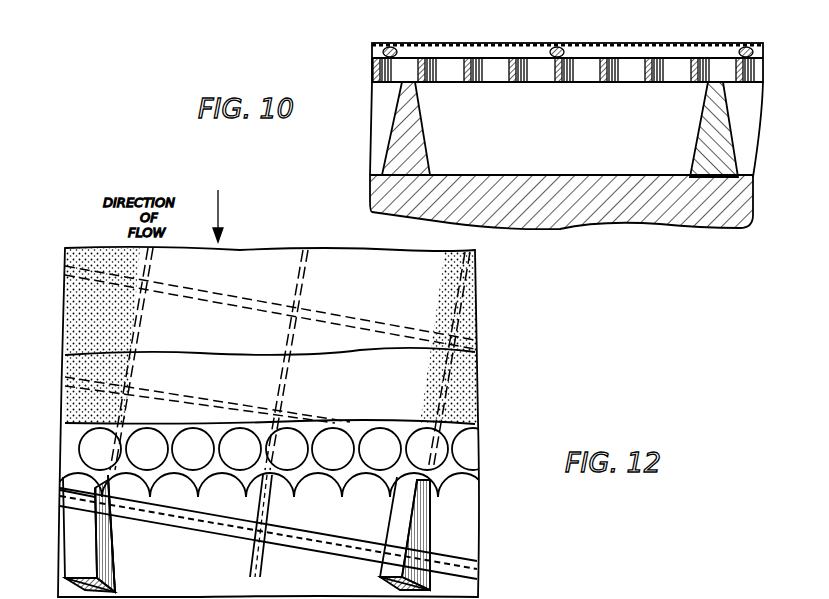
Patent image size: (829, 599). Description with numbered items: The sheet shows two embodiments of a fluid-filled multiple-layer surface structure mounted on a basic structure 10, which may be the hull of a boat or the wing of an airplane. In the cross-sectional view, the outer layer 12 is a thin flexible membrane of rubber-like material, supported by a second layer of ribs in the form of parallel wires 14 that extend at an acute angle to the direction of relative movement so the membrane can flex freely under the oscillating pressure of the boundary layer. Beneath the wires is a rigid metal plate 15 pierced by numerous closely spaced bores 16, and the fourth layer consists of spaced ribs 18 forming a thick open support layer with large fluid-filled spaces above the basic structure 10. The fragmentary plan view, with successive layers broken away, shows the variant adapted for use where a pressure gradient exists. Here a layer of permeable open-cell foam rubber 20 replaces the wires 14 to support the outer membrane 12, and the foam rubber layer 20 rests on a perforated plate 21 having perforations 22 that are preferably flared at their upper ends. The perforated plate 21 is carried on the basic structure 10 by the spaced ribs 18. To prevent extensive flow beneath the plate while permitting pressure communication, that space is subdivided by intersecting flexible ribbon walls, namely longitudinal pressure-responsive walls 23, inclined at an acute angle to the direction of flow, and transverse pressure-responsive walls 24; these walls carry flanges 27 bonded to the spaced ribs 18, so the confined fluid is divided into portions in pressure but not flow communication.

In FIG. 10, the basic structure 10 is at (372, 193).
In FIG. 12, the basic structure 10 is at (314, 579).
In FIG. 10, the outer layer 12 is at (562, 45).
In FIG. 12, the outer layer 12 is at (268, 422).
In FIG. 10, the parallel wires 14 is at (390, 47).
In FIG. 12, the parallel wires 14 is at (290, 359).
In FIG. 10, the metal plate 15 is at (372, 66).
In FIG. 10, the bores 16 is at (512, 68).
In FIG. 10, the ribs 18 is at (415, 124).
In FIG. 12, the ribs 18 is at (108, 568).
In FIG. 12, the foam rubber layer 20 is at (270, 399).
In FIG. 12, the perforated plate 21 is at (452, 468).
In FIG. 12, the perforations 22 is at (150, 432).
In FIG. 12, the longitudinal pressure-responsive walls 23 is at (247, 568).
In FIG. 12, the transverse pressure-responsive walls 24 is at (187, 518).
In FIG. 12, the flanges 27 is at (92, 500).